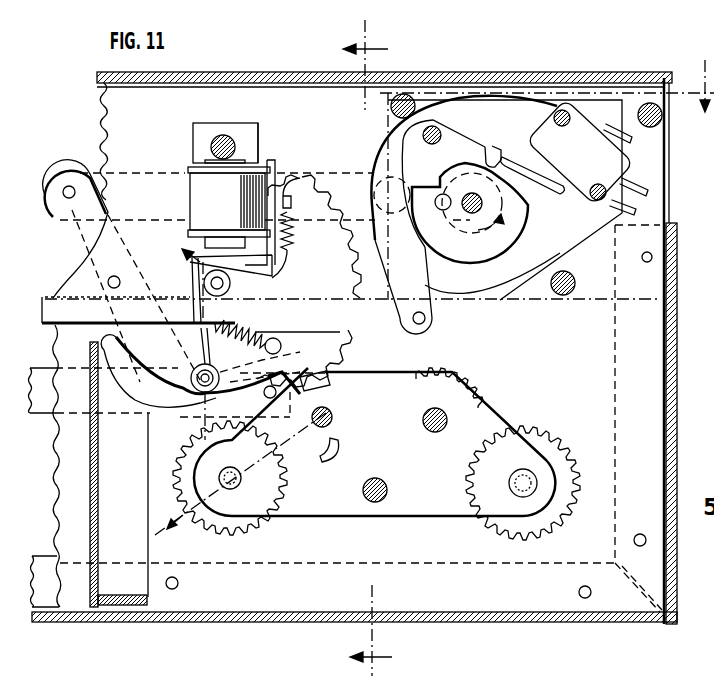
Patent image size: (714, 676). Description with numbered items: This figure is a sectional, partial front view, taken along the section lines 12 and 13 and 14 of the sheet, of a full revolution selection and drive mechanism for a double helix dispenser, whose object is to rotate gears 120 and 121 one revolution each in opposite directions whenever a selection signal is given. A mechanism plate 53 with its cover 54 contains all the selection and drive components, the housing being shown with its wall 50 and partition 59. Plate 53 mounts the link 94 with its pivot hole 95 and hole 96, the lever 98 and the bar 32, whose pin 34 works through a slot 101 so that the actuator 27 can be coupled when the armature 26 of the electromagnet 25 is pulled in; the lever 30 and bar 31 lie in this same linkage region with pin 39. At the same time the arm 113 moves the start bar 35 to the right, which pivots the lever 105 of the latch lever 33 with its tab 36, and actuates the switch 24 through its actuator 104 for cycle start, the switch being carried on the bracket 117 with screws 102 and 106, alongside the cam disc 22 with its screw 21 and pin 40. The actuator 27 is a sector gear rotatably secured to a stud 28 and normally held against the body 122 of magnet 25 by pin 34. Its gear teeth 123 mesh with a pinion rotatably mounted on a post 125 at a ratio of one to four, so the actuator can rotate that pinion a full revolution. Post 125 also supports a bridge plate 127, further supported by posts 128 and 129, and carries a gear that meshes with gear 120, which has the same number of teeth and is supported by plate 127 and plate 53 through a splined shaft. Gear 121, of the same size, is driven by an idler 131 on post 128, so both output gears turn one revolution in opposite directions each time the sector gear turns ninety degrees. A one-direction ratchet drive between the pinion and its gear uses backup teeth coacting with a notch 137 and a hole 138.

The section line 12- 12 is at (350, 348).
The section line 13- 13 is at (547, 101).
The section line 14- 14 is at (239, 392).
The screw 21 is at (483, 198).
The cam disc 22 is at (500, 255).
The switch 24 is at (596, 164).
The electromagnet 25 is at (229, 211).
The armature 26 is at (268, 262).
The actuator 27 is at (329, 264).
The stud 28 is at (231, 284).
The latch lever 30 is at (190, 372).
The bar 31 is at (254, 326).
The bar 32 is at (52, 425).
The latch lever 33 is at (384, 172).
The pin 34 is at (265, 392).
The start bar 35 is at (348, 330).
The latch tab 36 is at (481, 146).
The pin 39 is at (282, 348).
The pin 40 is at (444, 211).
The housing bottom wall 50 is at (535, 621).
The mechanism plate 53 is at (586, 396).
The cover 54 is at (548, 74).
The partition 59 is at (107, 505).
The link 94 is at (97, 170).
The pivot hole 95 is at (64, 200).
The hole 96 is at (118, 276).
The lever 98 is at (80, 255).
The slot 101 is at (190, 412).
The screw 102 is at (563, 296).
The switch actuator 104 is at (503, 152).
The lever 105 is at (428, 272).
The screw 106 is at (422, 134).
The arm 113 is at (190, 285).
The bracket 117 is at (567, 250).
The gear 120 is at (255, 536).
The gear 121 is at (485, 532).
The body 122 is at (264, 171).
The gear teeth 123 is at (347, 343).
The post 125 is at (334, 418).
The bridge plate 127 is at (411, 457).
The post 128 is at (446, 429).
The post 129 is at (388, 489).
The idler 131 is at (478, 368).
The notch 137 is at (330, 385).
The hole 138 is at (322, 456).